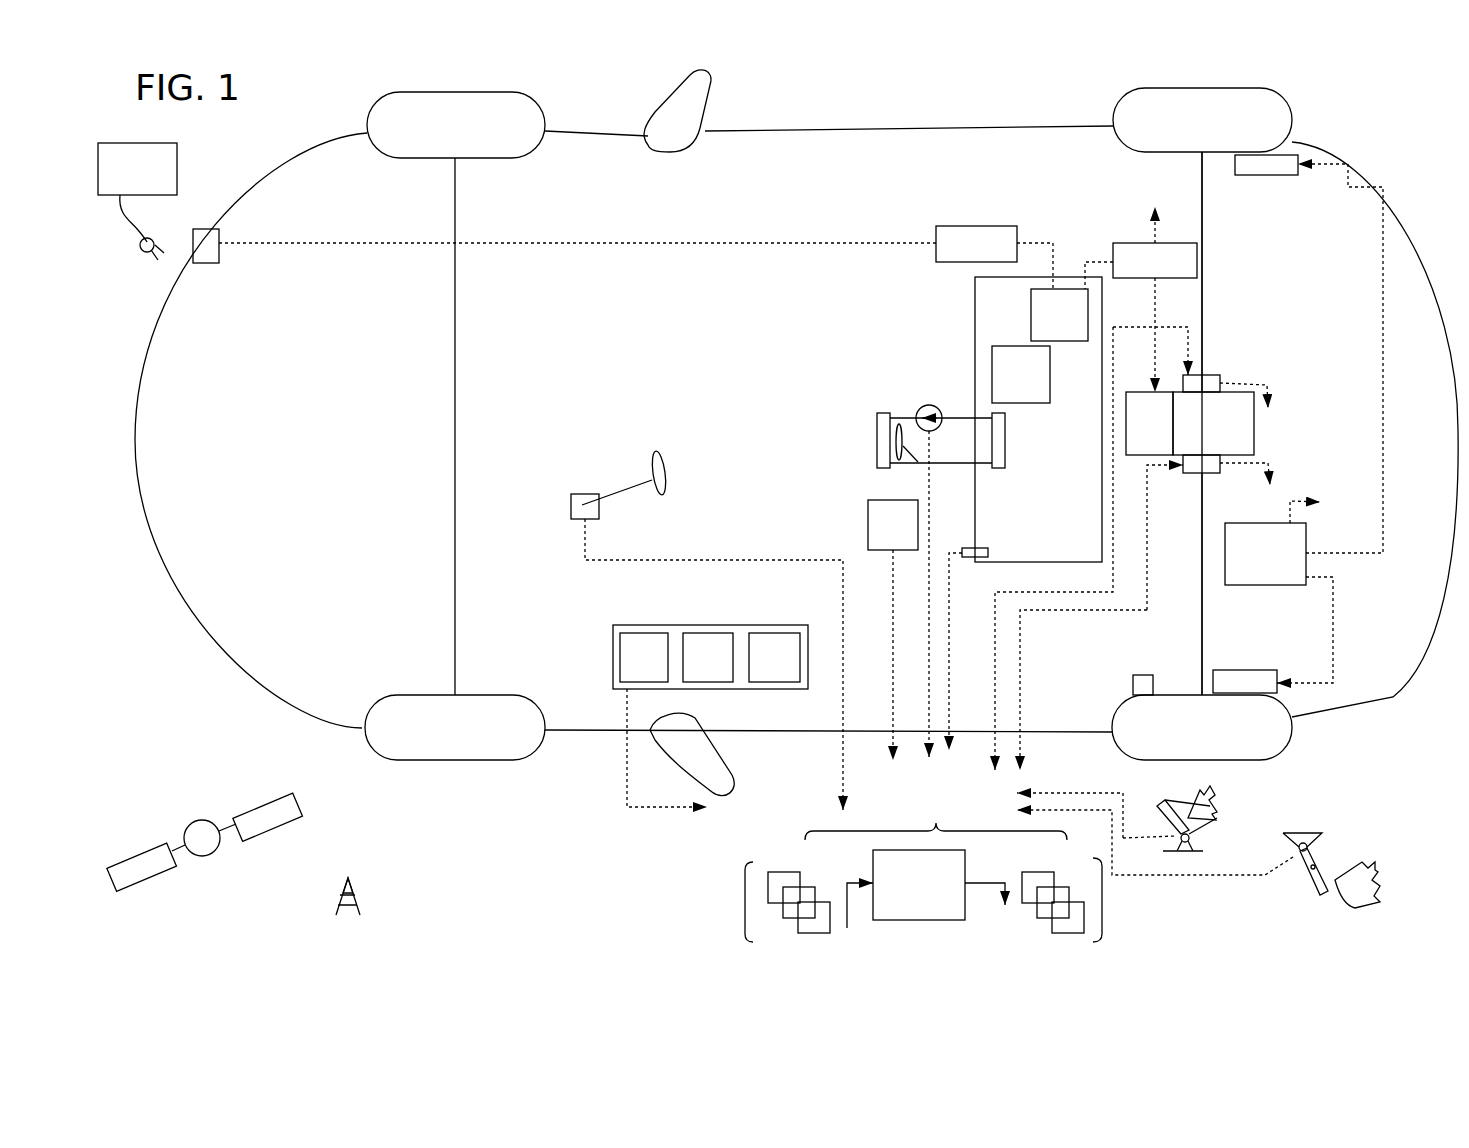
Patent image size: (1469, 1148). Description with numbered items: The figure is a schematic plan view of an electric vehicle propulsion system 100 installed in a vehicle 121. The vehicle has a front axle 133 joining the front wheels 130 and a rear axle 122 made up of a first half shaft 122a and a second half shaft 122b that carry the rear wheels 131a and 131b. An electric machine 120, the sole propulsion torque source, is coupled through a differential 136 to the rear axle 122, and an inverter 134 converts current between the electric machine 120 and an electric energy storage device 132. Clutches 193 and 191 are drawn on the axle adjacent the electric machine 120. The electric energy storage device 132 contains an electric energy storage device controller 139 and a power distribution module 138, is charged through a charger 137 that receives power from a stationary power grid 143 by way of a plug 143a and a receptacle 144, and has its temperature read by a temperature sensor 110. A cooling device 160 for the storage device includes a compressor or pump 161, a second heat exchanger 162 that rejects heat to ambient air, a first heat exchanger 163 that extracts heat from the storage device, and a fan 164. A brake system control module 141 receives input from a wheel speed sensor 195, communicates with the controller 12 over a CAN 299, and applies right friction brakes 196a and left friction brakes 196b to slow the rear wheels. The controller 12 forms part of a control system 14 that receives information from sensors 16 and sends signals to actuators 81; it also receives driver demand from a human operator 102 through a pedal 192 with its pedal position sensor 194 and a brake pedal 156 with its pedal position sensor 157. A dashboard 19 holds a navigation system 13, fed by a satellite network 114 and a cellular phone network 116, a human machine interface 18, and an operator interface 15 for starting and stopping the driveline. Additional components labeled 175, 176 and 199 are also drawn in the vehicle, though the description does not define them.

The electric vehicle propulsion system 100 is at (1248, 337).
The human operator 102 is at (1200, 805).
The temperature sensor 110 is at (972, 548).
The satellite network 114 is at (210, 856).
The cellular phone network 116 is at (352, 898).
The controller 12 is at (919, 885).
The electric machine 120 is at (1149, 423).
The vehicle 121 is at (1402, 717).
The rear axle 122 is at (1228, 232).
The first half shaft 122a is at (1203, 202).
The second half shaft 122b is at (1203, 628).
The navigation system 13 is at (644, 657).
The front wheels 130 is at (472, 92).
The rear wheel 131a is at (1245, 88).
The rear wheel 131b is at (1240, 760).
The electric energy storage device 132 is at (1038, 419).
The front axle 133 is at (447, 500).
The inverter 134 is at (1155, 276).
The differential 136 is at (1213, 423).
The charger 137 is at (994, 257).
The power distribution module 138 is at (1072, 301).
The electric energy storage device controller 139 is at (1021, 374).
The control system 14 is at (977, 860).
The brake system control module 141 is at (1304, 423).
The stationary power grid 143 is at (137, 169).
The plug 143a is at (131, 232).
The receptacle 144 is at (207, 263).
The operator interface 15 is at (774, 657).
The brake pedal 156 is at (1326, 892).
The pedal position sensor 157 is at (1297, 850).
The sensors 16 is at (745, 903).
The cooling device 160 is at (922, 380).
The compressor or pump 161 is at (918, 410).
The second heat exchanger 162 is at (878, 425).
The first heat exchanger 163 is at (1000, 445).
The fan 164 is at (919, 464).
The camera 175 is at (590, 494).
The rearview mirror 176 is at (662, 452).
The human machine interface 18 is at (708, 657).
The dashboard 19 is at (745, 625).
The clutch 191 is at (1208, 532).
The pedal 192 is at (1168, 820).
The clutch 193 is at (1208, 381).
The pedal position sensor 194 is at (1192, 838).
The wheel speed sensor 195 is at (1143, 675).
The right friction brakes 196a is at (1266, 165).
The left friction brakes 196b is at (1245, 682).
The sensor 199 is at (893, 630).
The CAN 299 is at (1260, 383).
The actuators 81 is at (1102, 903).